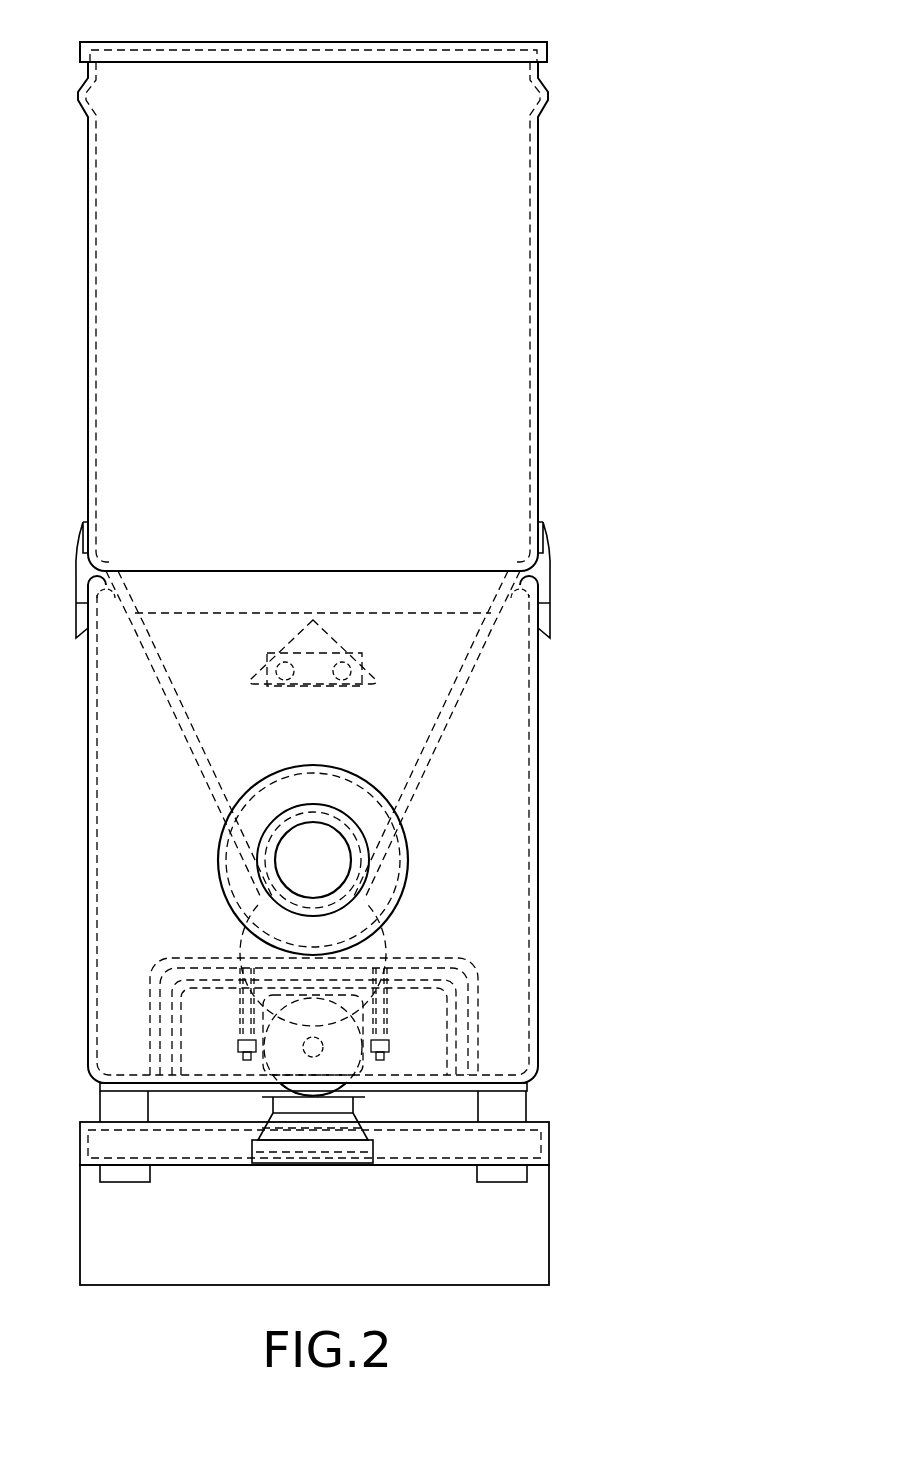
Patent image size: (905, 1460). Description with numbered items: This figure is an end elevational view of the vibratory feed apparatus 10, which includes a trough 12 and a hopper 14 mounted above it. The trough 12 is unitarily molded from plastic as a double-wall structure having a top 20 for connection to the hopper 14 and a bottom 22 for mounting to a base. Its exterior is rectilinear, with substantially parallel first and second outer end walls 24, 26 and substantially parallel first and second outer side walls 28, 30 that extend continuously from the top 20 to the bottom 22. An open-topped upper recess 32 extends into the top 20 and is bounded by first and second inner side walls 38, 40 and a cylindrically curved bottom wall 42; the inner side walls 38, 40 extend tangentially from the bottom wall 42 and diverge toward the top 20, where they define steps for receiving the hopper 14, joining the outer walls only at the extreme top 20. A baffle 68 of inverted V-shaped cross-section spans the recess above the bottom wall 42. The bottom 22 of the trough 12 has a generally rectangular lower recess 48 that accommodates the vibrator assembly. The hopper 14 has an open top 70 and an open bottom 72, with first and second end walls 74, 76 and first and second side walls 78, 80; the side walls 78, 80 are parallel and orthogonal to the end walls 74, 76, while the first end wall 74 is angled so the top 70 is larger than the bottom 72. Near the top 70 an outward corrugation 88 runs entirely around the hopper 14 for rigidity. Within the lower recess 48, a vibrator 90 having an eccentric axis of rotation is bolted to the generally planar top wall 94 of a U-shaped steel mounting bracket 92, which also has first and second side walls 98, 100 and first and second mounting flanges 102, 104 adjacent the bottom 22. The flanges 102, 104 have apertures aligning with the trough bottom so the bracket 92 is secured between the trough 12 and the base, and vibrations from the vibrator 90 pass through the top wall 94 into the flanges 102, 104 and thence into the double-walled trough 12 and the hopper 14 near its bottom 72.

The vibratory feed apparatus 10 is at (603, 450).
The trough 12 is at (325, 839).
The hopper 14 is at (323, 316).
The top 20 is at (83, 577).
The bottom 22 is at (95, 1078).
The first outer end wall 24 is at (115, 898).
The second outer end wall 26 is at (110, 712).
The first outer side wall 28 is at (88, 828).
The second outer side wall 30 is at (540, 887).
The upper recess 32 is at (448, 700).
The first inner side wall 38 is at (198, 770).
The second inner side wall 40 is at (448, 733).
The bottom wall 42 is at (255, 912).
The lower recess 48 is at (370, 1086).
The baffle 68 is at (345, 625).
The open top 70 is at (100, 52).
The open bottom 72 is at (135, 605).
The first end wall 74 is at (105, 160).
The second end wall 76 is at (115, 285).
The first side wall 78 is at (88, 212).
The second side wall 80 is at (540, 245).
The outward corrugation 88 is at (550, 95).
The vibrator 90 is at (360, 1088).
The mounting bracket 92 is at (466, 1100).
The top wall 94 is at (245, 990).
The first side wall 98 is at (183, 1002).
The second side wall 100 is at (448, 1033).
The first mounting flange 102 is at (120, 1090).
The second mounting flange 104 is at (508, 1097).